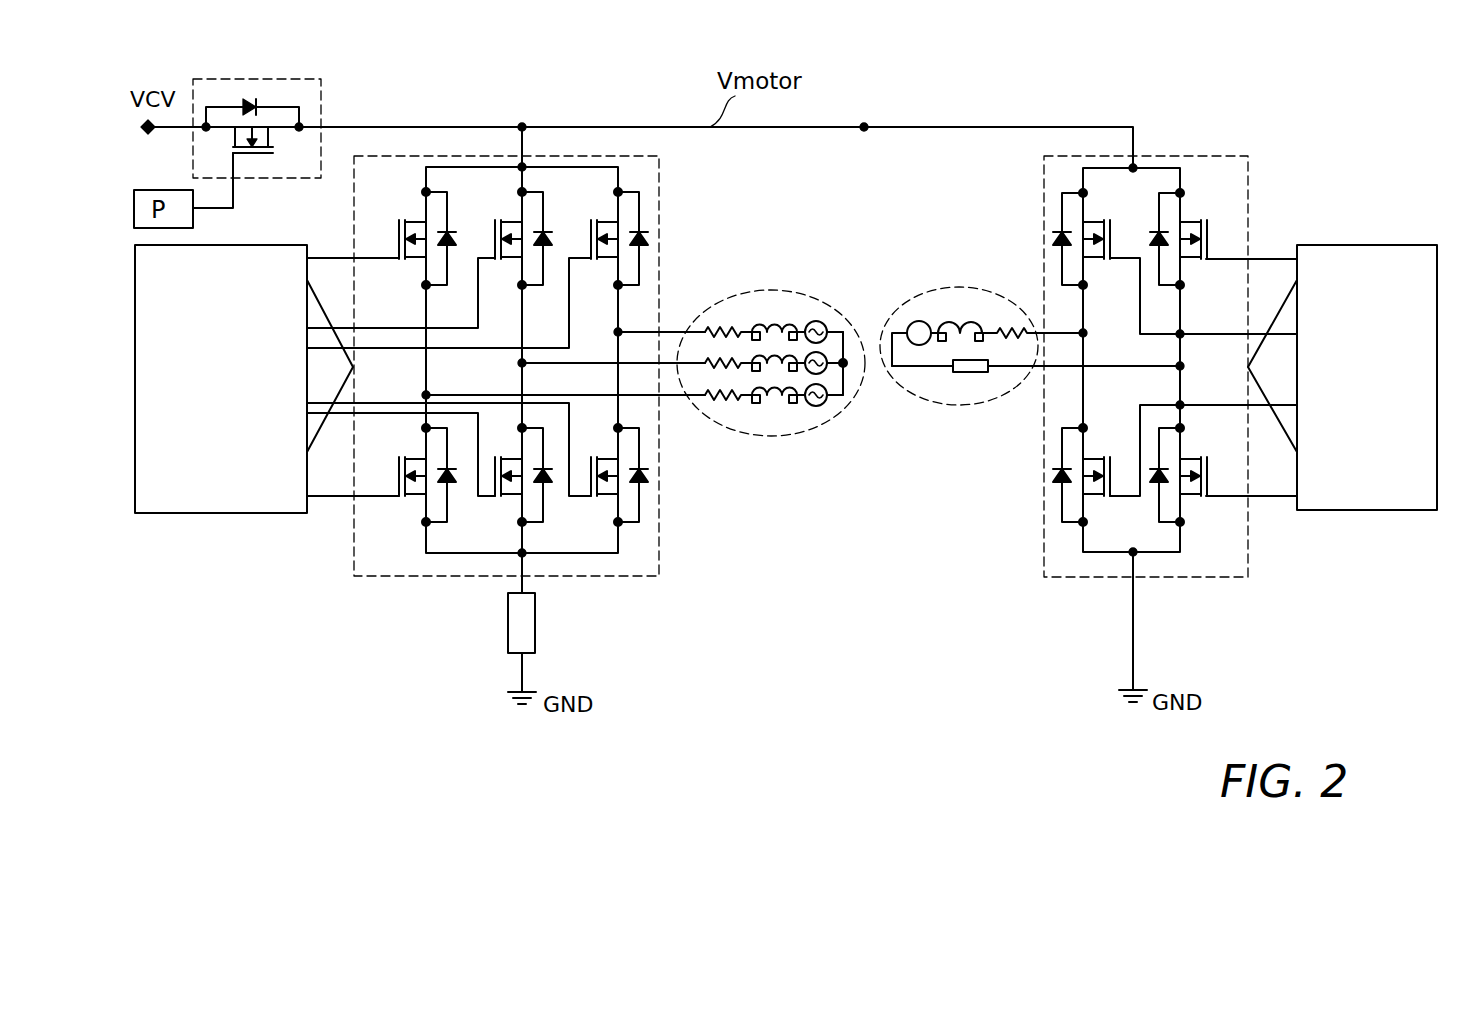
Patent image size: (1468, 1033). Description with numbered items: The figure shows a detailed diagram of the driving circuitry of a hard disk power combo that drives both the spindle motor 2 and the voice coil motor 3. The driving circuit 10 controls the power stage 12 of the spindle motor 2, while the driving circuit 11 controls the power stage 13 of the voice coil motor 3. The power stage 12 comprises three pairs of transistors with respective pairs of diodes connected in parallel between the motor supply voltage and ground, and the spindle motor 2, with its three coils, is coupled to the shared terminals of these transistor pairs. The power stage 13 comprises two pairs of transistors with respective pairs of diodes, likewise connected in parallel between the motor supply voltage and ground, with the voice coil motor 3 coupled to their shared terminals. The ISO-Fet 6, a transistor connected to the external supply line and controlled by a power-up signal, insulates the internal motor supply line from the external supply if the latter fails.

The spindle motor 2 is at (817, 428).
The voice coil motor 3 is at (928, 403).
The ISO-Fet 6 is at (282, 76).
The driving circuit 10 is at (240, 376).
The driving circuit 11 is at (1380, 386).
The power stage 12 is at (395, 579).
The power stage 13 is at (1247, 579).